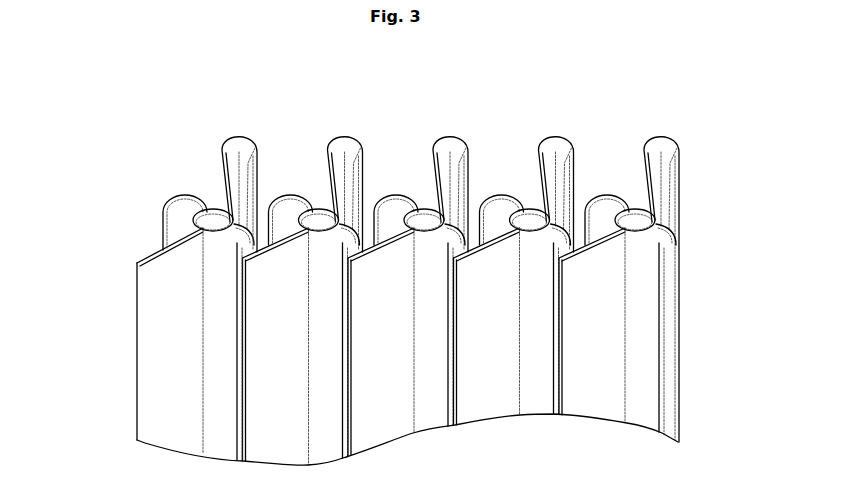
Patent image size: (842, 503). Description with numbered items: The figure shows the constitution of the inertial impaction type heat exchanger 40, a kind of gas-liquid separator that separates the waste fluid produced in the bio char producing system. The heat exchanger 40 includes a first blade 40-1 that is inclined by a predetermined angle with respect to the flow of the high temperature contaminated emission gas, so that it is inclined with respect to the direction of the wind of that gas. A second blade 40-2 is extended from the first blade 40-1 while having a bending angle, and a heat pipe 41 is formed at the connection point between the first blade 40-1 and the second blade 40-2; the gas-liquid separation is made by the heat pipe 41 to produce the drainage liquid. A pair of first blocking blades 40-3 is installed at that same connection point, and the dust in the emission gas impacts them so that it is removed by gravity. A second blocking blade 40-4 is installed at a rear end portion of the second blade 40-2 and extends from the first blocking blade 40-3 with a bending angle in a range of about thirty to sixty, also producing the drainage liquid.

The inertial impaction type heat exchanger 40 is at (128, 97).
The first blade 40-1 is at (140, 319).
The second blade 40-2 is at (223, 167).
The first blocking blade 40-3 is at (168, 205).
The second blocking blade 40-4 is at (262, 142).
The heat pipe 41 is at (213, 221).